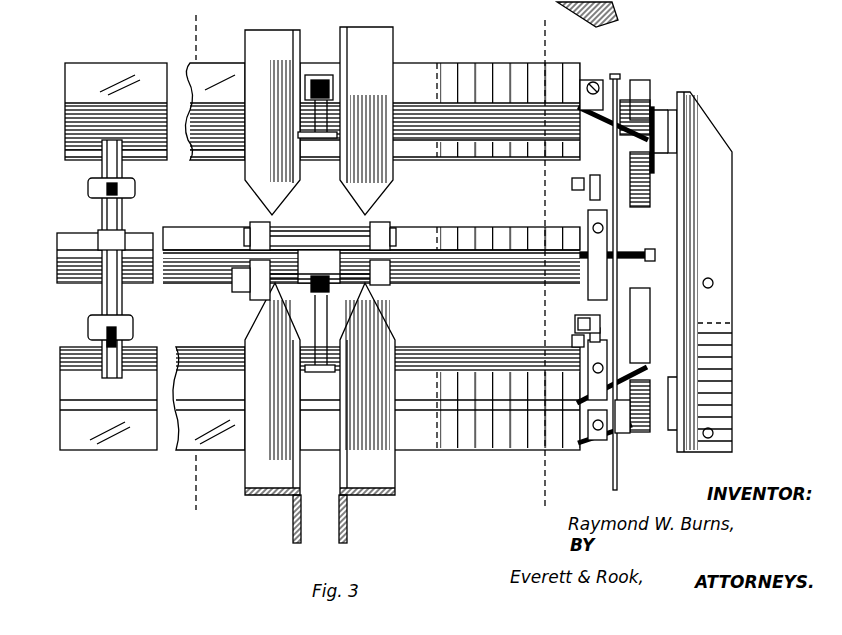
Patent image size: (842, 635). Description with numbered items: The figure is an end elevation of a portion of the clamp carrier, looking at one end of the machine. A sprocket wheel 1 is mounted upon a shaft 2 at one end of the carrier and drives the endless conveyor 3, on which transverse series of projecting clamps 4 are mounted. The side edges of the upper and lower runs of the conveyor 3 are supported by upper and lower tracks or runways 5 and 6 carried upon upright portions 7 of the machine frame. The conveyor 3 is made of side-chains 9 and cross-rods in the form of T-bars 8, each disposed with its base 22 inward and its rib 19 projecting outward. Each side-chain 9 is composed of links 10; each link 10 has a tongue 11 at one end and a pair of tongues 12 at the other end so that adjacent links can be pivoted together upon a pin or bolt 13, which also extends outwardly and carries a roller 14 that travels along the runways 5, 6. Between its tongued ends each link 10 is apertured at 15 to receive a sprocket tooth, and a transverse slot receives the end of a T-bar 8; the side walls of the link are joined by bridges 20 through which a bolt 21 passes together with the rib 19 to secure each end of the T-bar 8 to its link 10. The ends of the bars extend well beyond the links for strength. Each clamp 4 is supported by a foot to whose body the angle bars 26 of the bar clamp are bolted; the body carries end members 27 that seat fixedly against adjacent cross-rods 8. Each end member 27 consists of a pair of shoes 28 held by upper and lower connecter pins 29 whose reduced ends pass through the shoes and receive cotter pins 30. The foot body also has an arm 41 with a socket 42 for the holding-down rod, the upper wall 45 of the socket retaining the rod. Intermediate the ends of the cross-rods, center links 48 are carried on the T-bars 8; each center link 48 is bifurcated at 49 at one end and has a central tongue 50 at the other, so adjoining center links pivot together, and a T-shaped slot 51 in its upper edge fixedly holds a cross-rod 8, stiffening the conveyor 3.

The sprocket wheel 1 is at (495, 25).
The shaft 2 is at (655, 255).
The endless conveyor 3 is at (618, 77).
The clamps 4 is at (135, 25).
The upper track or runway 5 is at (675, 147).
The lower track or runway 6 is at (677, 417).
The upright portion of the frame 7 is at (722, 270).
The T-bar cross-rod 8 is at (150, 75).
The side-chain 9 is at (594, 80).
The link 10 is at (648, 84).
The tongue 11 is at (575, 327).
The pair of tongues 12 is at (572, 182).
The pin or bolt 13 is at (590, 188).
The roller 14 is at (647, 92).
The aperture 15 is at (590, 288).
The rib of the T-bar 19 is at (484, 262).
The bridge 20 is at (592, 125).
The bolt 21 is at (604, 78).
The base of the T-bar 22 is at (445, 238).
The angle bars 26 is at (352, 50).
The end members 27 is at (253, 213).
The shoes 28 is at (385, 218).
The pins 29 is at (318, 242).
The cotter pins 30 is at (267, 288).
The arm 41 is at (312, 90).
The socket 42 is at (312, 80).
The upper wall of the socket 45 is at (313, 102).
The center links 48 is at (102, 168).
The bifurcated end 49 is at (125, 202).
The central tongue 50 is at (104, 210).
The slot 51 is at (125, 245).